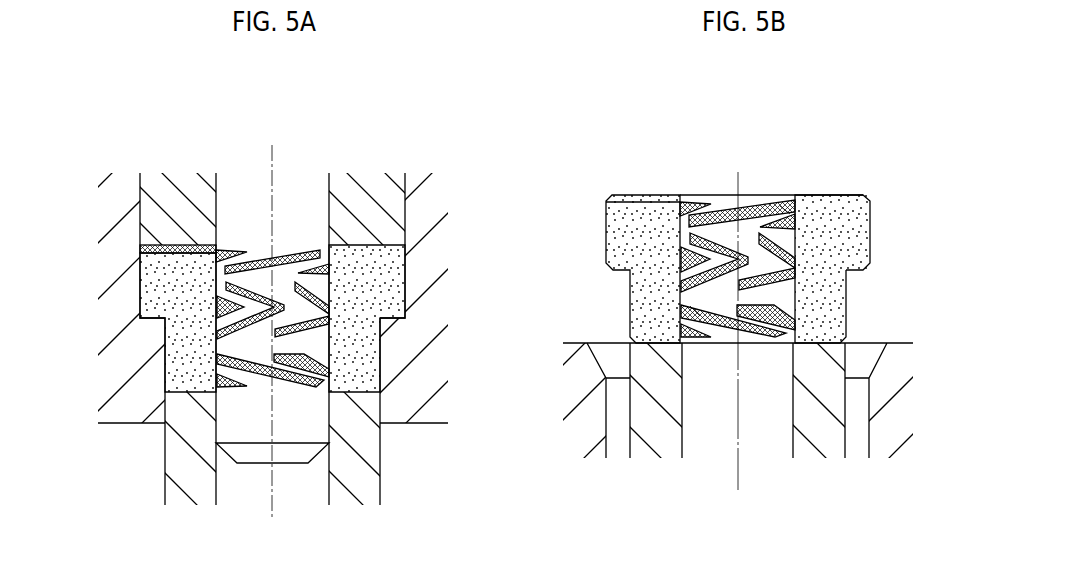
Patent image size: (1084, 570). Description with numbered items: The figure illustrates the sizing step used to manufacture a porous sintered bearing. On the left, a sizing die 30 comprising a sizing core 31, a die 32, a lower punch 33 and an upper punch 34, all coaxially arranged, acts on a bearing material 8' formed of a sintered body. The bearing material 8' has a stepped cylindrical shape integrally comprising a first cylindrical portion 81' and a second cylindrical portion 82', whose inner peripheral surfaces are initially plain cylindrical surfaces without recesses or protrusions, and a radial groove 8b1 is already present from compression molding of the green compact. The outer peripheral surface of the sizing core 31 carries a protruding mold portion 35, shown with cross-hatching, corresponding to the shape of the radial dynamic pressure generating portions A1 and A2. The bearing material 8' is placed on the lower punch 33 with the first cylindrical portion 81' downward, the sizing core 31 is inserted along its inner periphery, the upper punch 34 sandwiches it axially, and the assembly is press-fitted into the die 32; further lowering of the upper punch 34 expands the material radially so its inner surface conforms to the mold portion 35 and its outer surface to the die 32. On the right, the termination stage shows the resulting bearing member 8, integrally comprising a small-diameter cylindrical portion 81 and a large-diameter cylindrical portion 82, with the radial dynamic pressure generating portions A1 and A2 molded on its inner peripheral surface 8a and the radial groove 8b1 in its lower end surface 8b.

In FIG. 5A, the sizing die 30 is at (433, 157).
In FIG. 5B, the sizing die 30 is at (907, 321).
In FIG. 5A, the sizing core 31 is at (299, 181).
In FIG. 5A, the die 32 is at (110, 319).
In FIG. 5B, the die 32 is at (575, 438).
In FIG. 5A, the lower punch 33 is at (172, 460).
In FIG. 5B, the lower punch 33 is at (657, 440).
In FIG. 5A, the upper punch 34 is at (190, 182).
In FIG. 5A, the mold portion 35 is at (262, 384).
In FIG. 5A, the bearing material 8' is at (141, 322).
In FIG. 5A, the radial groove 8b1 is at (168, 250).
In FIG. 5B, the radial groove 8b1 is at (631, 200).
In FIG. 5A, the first cylindrical portion 81' is at (414, 355).
In FIG. 5A, the second cylindrical portion 82' is at (414, 281).
In FIG. 5B, the bearing member 8 is at (625, 269).
In FIG. 5B, the inner peripheral surface 8a is at (697, 203).
In FIG. 5B, the lower end surface 8b is at (831, 194).
In FIG. 5B, the small-diameter cylindrical portion 81 is at (848, 306).
In FIG. 5B, the large-diameter cylindrical portion 82 is at (857, 232).
In FIG. 5B, the radial dynamic pressure generating portion A1 is at (689, 314).
In FIG. 5B, the radial dynamic pressure generating portion A2 is at (784, 214).